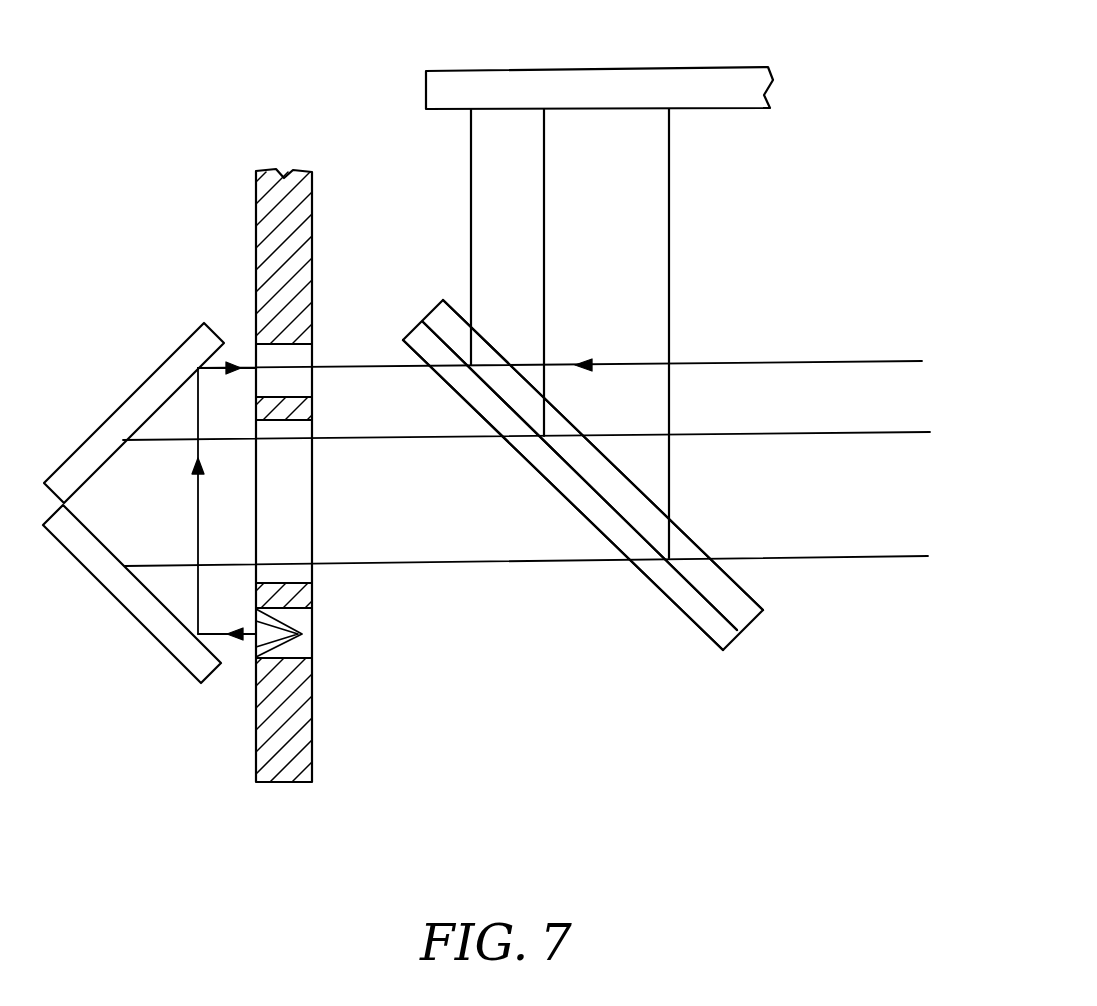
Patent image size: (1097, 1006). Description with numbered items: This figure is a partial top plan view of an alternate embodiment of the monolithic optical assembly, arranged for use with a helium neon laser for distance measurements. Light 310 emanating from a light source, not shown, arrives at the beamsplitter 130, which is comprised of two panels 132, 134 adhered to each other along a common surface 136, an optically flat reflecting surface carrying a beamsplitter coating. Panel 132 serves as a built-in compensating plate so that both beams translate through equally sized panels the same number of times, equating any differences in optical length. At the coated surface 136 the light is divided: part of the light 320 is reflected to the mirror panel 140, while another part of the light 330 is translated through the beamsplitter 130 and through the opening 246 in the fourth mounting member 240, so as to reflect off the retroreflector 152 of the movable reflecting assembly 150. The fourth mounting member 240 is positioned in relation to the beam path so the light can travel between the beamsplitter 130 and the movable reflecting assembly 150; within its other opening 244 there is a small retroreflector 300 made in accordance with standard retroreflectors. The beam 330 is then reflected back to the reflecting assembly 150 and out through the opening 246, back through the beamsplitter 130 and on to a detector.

The mirror panel 140 is at (745, 58).
The reflected part of the light 320 is at (471, 208).
The light 310 is at (771, 362).
The translated part of the light 330 is at (198, 418).
The retroreflector 152 is at (113, 420).
The movable reflecting assembly 150 is at (54, 548).
The fourth mounting member 240 is at (268, 203).
The opening 246 is at (320, 390).
The small retroreflector 300 is at (306, 620).
The opening 244 is at (320, 651).
The beamsplitter 130 is at (768, 612).
The panel 132 is at (730, 592).
The common surface 136 is at (680, 572).
The panel 134 is at (713, 630).